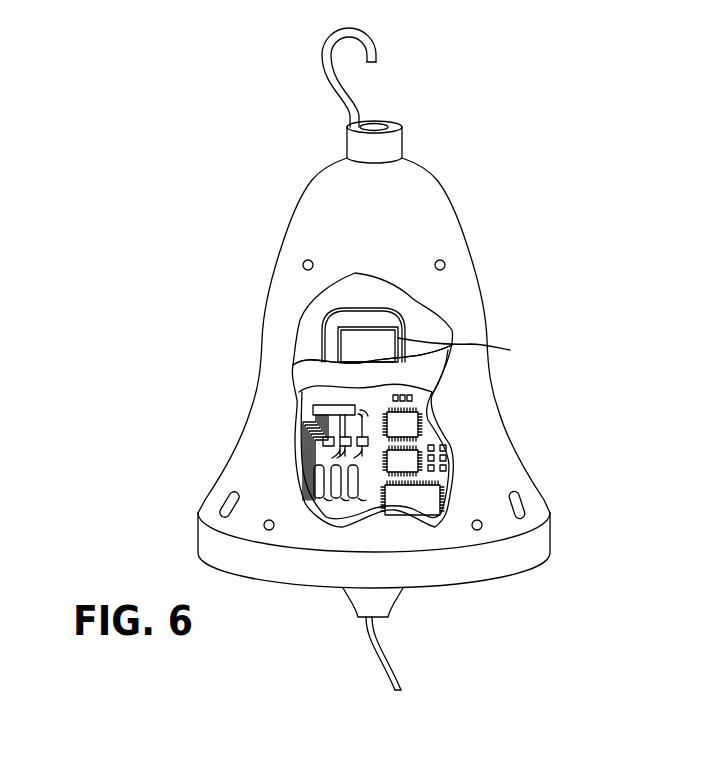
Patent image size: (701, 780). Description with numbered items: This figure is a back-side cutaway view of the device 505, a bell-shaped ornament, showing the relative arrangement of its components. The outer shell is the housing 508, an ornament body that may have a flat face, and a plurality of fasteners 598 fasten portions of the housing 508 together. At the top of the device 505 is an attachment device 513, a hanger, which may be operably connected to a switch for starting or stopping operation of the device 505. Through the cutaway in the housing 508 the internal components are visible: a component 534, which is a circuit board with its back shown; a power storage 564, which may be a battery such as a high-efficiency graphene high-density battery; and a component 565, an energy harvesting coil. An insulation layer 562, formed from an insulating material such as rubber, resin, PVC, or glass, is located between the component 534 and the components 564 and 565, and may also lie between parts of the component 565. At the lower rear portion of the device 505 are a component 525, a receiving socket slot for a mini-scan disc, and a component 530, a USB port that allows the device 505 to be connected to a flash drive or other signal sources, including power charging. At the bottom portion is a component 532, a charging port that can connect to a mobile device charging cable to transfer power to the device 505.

The device 505 is at (258, 78).
The attachment device 513 is at (378, 47).
The component 565 is at (316, 320).
The power storage 564 is at (473, 351).
The insulation layer 562 is at (305, 365).
The housing 508 is at (496, 392).
The component 534 is at (297, 448).
The component 530 is at (222, 503).
The component 525 is at (518, 503).
The fasteners 598 is at (480, 530).
The component 532 is at (397, 653).